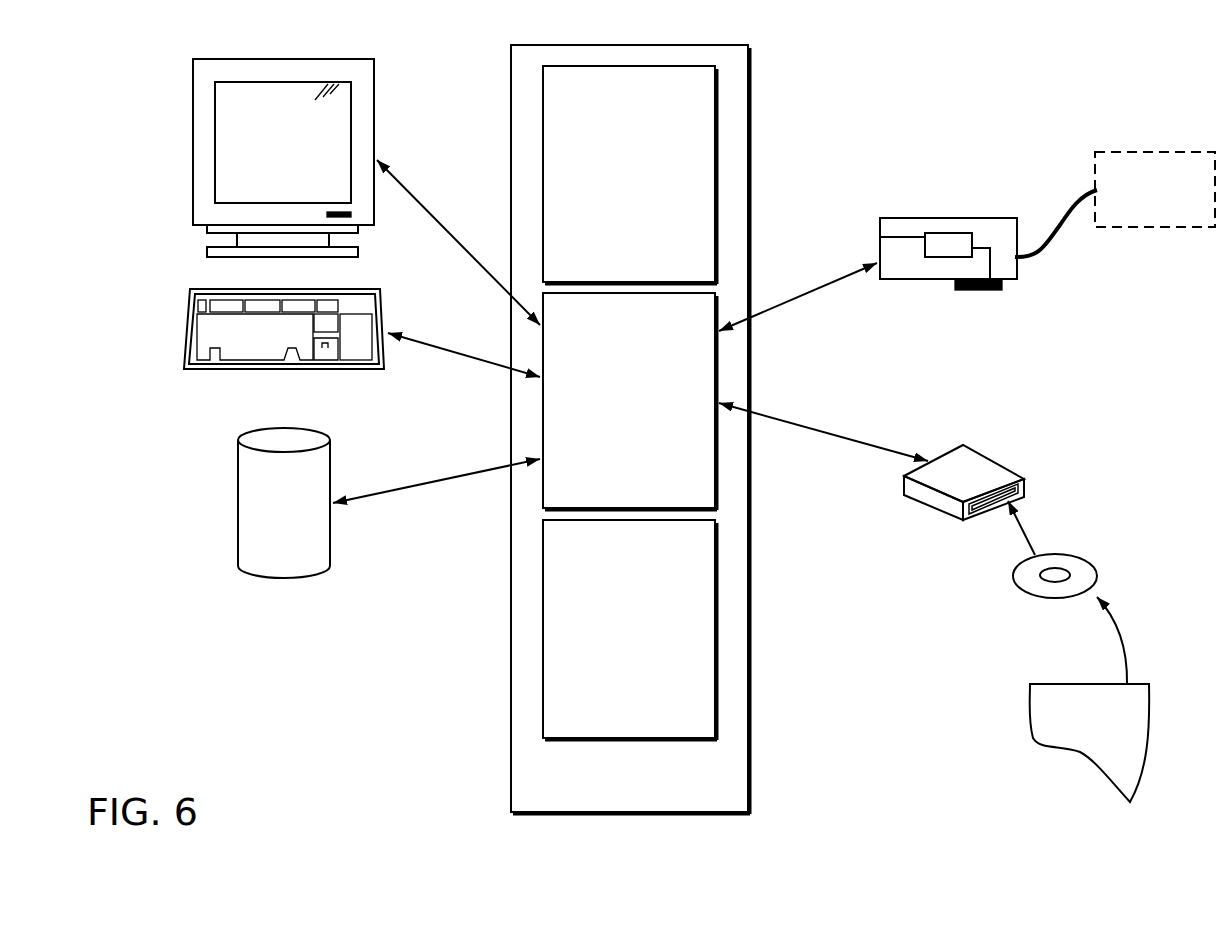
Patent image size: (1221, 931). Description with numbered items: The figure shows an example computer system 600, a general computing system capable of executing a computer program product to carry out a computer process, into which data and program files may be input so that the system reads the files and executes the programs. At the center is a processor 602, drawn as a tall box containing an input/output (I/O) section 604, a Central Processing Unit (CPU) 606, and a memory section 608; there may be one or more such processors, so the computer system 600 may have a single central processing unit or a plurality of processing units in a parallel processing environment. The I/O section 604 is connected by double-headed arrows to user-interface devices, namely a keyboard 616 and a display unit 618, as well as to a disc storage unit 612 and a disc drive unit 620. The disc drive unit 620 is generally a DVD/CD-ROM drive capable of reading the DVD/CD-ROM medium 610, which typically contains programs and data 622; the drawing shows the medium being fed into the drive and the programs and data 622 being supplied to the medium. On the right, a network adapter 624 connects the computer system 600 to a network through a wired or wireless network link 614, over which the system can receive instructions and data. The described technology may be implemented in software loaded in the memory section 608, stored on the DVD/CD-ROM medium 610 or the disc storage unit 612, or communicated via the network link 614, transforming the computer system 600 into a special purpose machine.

The computer system 600 is at (392, 713).
The processor 602 is at (612, 791).
The input/output (I/O) section 604 is at (612, 423).
The Central Processing Unit (CPU) 606 is at (612, 186).
The memory section 608 is at (612, 652).
The DVD/CD-ROM medium 610 is at (1093, 563).
The disc storage unit 612 is at (238, 503).
The network link 614 is at (1045, 252).
The keyboard 616 is at (187, 328).
The display unit 618 is at (193, 158).
The disc drive unit 620 is at (987, 458).
The programs and data 622 is at (1030, 697).
The network adapter 624 is at (920, 218).